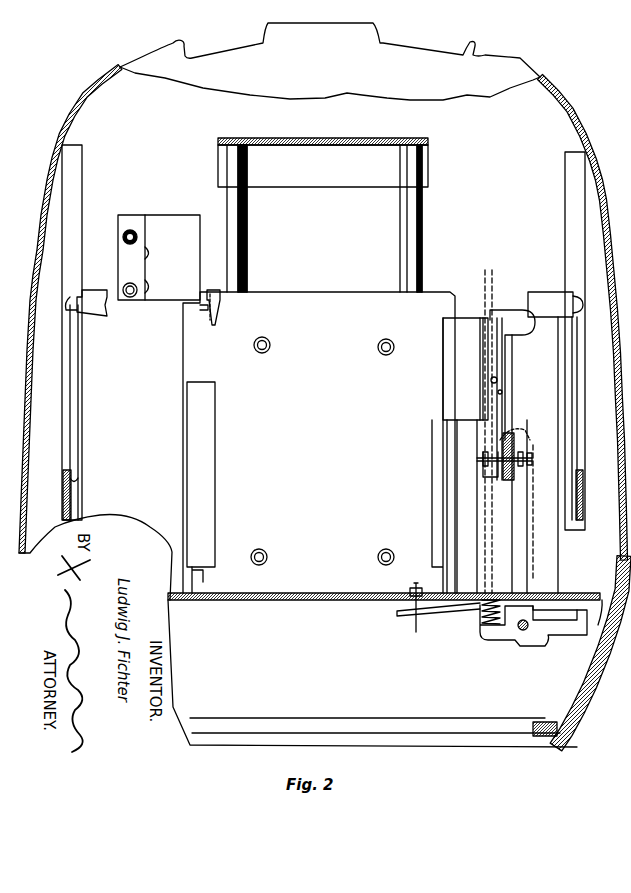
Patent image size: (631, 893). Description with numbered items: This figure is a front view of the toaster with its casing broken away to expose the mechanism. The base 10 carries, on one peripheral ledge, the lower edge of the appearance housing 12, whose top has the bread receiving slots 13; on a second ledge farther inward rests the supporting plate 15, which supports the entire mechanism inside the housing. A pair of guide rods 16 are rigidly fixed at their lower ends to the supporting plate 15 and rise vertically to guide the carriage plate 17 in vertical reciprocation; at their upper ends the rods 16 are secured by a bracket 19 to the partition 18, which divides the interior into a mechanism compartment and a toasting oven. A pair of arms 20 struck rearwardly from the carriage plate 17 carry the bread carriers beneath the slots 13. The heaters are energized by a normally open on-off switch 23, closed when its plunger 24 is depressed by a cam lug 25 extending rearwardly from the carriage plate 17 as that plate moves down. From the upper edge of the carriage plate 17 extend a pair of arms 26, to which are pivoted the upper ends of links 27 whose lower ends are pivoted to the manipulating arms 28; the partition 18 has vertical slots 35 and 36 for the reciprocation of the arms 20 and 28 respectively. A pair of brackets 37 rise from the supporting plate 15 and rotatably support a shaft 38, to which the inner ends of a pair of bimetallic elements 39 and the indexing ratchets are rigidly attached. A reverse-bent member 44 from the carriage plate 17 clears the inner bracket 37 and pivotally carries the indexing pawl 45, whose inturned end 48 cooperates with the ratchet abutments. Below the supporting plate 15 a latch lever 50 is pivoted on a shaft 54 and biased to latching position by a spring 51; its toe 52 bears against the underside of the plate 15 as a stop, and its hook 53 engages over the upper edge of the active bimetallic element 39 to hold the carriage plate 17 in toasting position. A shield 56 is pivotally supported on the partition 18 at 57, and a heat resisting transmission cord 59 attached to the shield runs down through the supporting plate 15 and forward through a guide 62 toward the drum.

The base 10 is at (595, 708).
The appearance housing 12 is at (598, 200).
The bread receiving slots 13 is at (180, 40).
The supporting plate 15 is at (240, 600).
The guide rods 16 is at (247, 232).
The carriage plate 17 is at (350, 433).
The partition 18 is at (319, 121).
The bracket 19 is at (378, 141).
The arms 20 is at (205, 577).
The on-off switch 23 is at (160, 300).
The plunger 24 is at (205, 312).
The cam lug 25 is at (212, 325).
The arms 26 is at (95, 316).
The links 27 is at (73, 400).
The manipulating arms 28 is at (63, 478).
The slot 35 is at (432, 500).
The slot 36 is at (80, 475).
The brackets 37 is at (470, 525).
The shaft 38 is at (520, 463).
The bimetallic elements 39 is at (514, 437).
The member 44 is at (472, 375).
The indexing pawl 45 is at (503, 388).
The inturned end 48 is at (478, 452).
The latch lever 50 is at (545, 485).
The spring 51 is at (480, 612).
The toe 52 is at (580, 636).
The hook 53 is at (525, 425).
The shaft 54 is at (523, 630).
The shield 56 is at (492, 285).
The pivot 57 is at (502, 318).
The heat resisting transmission cord 59 is at (400, 618).
The guide 62 is at (418, 622).